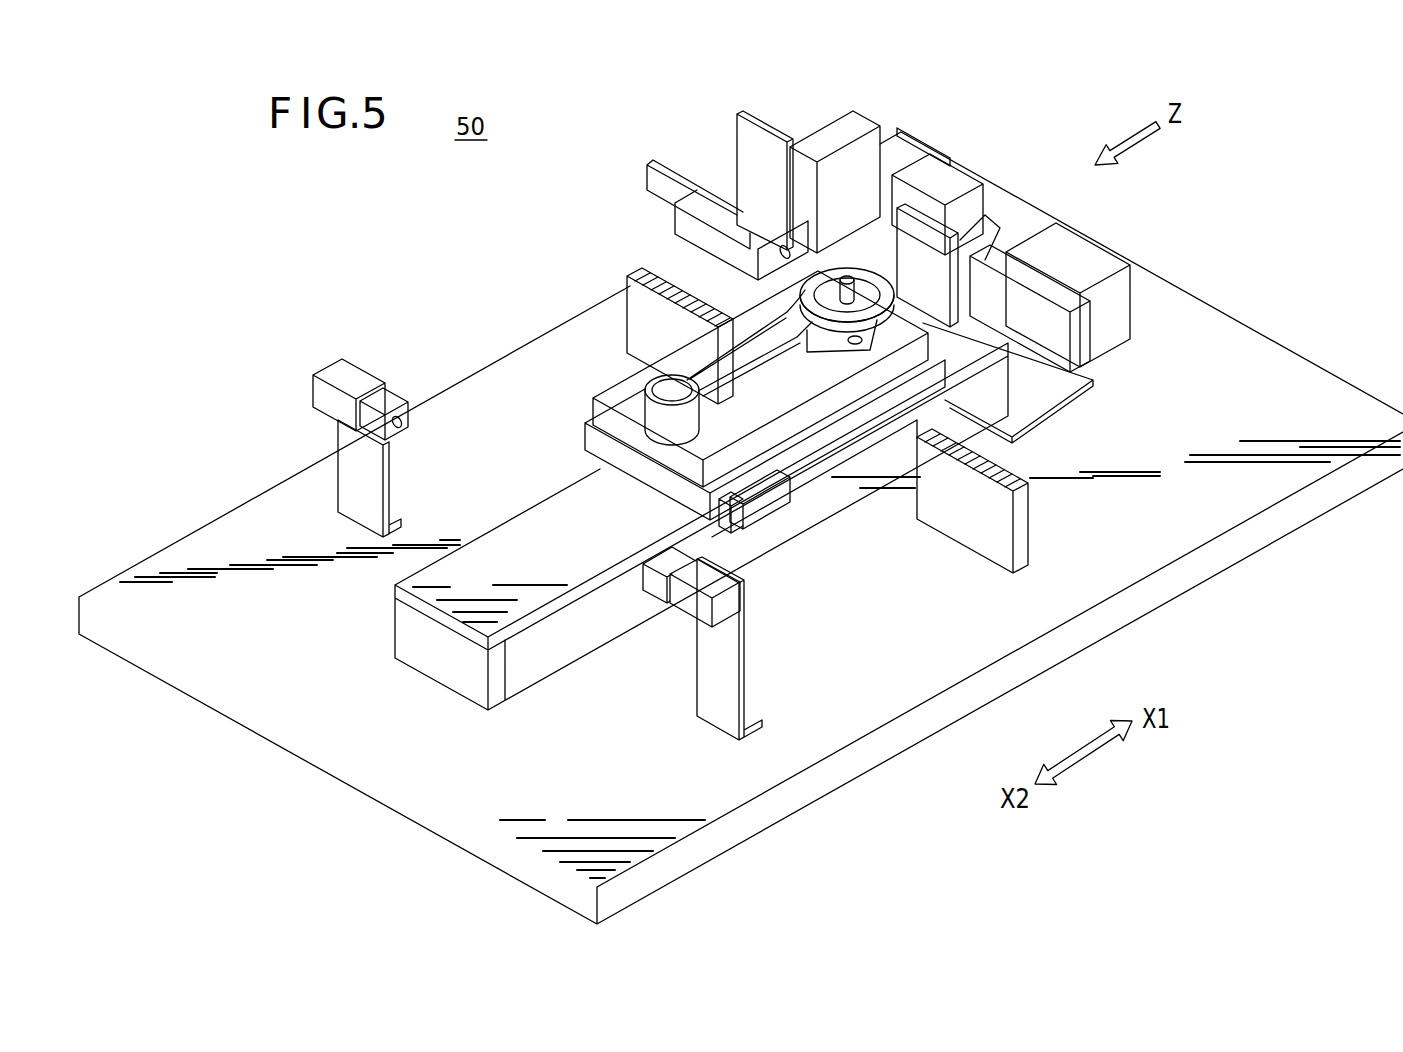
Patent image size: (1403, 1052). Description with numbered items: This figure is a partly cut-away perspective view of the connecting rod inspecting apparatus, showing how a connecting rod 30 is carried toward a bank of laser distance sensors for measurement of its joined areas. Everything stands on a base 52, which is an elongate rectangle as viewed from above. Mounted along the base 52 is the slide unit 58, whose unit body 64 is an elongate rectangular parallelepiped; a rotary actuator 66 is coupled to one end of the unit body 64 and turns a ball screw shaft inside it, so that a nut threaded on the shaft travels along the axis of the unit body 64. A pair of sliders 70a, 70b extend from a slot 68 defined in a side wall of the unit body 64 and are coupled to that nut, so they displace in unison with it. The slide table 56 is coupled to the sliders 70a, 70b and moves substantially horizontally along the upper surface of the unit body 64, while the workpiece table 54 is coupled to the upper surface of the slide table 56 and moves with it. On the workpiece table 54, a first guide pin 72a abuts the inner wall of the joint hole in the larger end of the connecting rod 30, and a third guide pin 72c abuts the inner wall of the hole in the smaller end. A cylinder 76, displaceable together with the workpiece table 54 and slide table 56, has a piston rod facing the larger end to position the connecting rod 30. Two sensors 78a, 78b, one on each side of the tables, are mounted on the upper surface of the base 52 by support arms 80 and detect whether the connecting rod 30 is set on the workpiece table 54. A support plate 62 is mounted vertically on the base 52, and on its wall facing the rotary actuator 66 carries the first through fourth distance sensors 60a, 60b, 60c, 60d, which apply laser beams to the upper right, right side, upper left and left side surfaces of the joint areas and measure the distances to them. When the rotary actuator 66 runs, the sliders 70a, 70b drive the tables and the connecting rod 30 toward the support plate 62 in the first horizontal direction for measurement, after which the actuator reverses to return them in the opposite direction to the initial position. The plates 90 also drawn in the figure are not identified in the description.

The connecting rod 30 is at (715, 356).
The base 52 is at (1232, 546).
The workpiece table 54 is at (602, 402).
The slide table 56 is at (640, 468).
The slide unit 58 is at (548, 488).
The first distance sensor 60a is at (863, 120).
The second distance sensor 60b is at (672, 222).
The third distance sensor 60c is at (950, 163).
The fourth distance sensor 60d is at (1085, 347).
The support plate 62 is at (626, 282).
The unit body 64 is at (812, 513).
The rotary actuator 66 is at (1097, 244).
The slot 68 is at (538, 630).
The slider 70a is at (790, 508).
The slider 70b is at (760, 518).
The first guide pin 72a is at (847, 278).
The third guide pin 72c is at (652, 383).
The cylinder 76 is at (990, 215).
The sensor 78a is at (396, 393).
The sensor 78b is at (660, 592).
The support arm 80 is at (338, 437).
The reference plate 90 is at (760, 135).